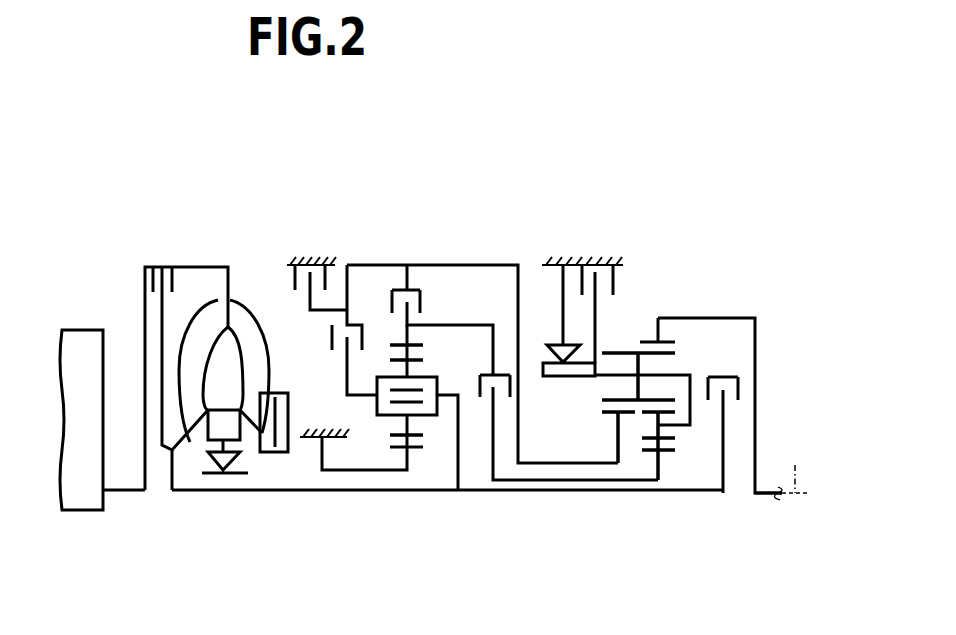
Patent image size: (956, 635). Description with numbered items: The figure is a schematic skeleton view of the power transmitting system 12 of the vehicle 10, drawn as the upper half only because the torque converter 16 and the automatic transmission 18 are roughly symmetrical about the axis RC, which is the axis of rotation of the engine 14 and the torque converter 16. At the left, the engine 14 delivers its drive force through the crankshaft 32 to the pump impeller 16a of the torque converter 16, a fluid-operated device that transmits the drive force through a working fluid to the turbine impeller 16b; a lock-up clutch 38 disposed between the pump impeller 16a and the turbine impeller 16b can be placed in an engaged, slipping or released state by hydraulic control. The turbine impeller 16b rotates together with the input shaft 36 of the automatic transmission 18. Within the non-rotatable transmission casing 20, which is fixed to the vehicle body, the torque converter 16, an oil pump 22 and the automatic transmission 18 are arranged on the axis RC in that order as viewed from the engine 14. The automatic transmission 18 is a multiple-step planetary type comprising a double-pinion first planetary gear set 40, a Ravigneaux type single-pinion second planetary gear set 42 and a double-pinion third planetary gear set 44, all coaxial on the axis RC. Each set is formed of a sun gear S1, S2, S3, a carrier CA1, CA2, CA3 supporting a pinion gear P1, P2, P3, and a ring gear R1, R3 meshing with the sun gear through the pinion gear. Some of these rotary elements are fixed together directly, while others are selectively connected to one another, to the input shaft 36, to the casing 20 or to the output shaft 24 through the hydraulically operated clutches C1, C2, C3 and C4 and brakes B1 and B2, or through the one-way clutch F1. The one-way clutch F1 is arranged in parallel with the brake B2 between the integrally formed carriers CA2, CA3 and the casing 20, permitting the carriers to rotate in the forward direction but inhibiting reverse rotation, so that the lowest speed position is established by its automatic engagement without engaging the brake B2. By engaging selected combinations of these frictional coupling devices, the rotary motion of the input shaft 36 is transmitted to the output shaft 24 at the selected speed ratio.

The vehicle 10 is at (224, 145).
The power transmitting system 12 is at (343, 188).
The engine 14 is at (78, 338).
The torque converter 16 is at (215, 342).
The pump impeller 16a is at (252, 343).
The turbine impeller 16b is at (198, 345).
The automatic transmission 18 is at (455, 220).
The transmission casing 20 is at (305, 256).
The oil pump 22 is at (280, 393).
The output shaft 24 is at (765, 497).
The crankshaft 32 is at (122, 493).
The input shaft 36 is at (228, 493).
The lock-up clutch 38 is at (174, 278).
The first planetary gear set 40 is at (390, 358).
The second planetary gear set 42 is at (628, 349).
The third planetary gear set 44 is at (688, 380).
The brake B1 is at (292, 277).
The brake B2 is at (613, 282).
The clutch C1 is at (478, 390).
The clutch C2 is at (740, 400).
The clutch C3 is at (423, 300).
The clutch C4 is at (330, 333).
The carrier CA1 is at (375, 407).
The carrier CA2 is at (730, 336).
The carrier CA3 is at (692, 377).
The one-way clutch F1 is at (566, 320).
The pinion gear P1 is at (400, 358).
The pinion gear P2 is at (613, 350).
The pinion gear P3 is at (652, 434).
The ring gear R1 is at (417, 337).
The ring gear R3 is at (667, 318).
The sun gear S1 is at (413, 448).
The sun gear S2 is at (615, 413).
The sun gear S3 is at (667, 453).
The axis RC is at (791, 466).